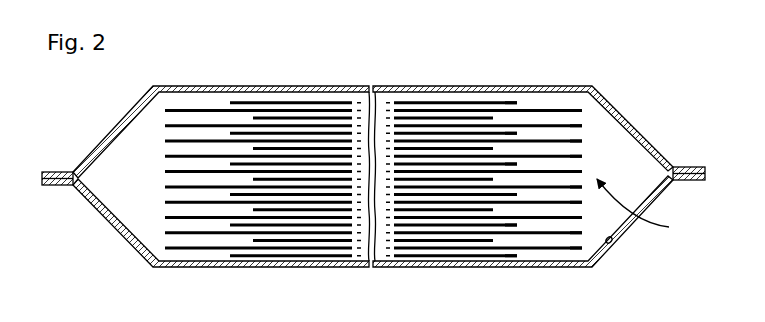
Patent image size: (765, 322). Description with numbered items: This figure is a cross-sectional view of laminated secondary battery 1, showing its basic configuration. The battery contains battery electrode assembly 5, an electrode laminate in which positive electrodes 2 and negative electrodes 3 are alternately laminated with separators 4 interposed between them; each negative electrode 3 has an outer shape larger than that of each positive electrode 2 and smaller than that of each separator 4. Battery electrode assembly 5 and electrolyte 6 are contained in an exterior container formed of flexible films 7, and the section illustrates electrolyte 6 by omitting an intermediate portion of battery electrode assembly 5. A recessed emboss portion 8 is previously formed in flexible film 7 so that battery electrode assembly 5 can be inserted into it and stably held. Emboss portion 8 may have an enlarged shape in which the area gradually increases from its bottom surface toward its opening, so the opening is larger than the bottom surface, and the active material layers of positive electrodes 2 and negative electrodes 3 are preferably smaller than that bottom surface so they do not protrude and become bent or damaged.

The laminated secondary battery 1 is at (219, 63).
The positive electrode 2 is at (467, 146).
The negative electrode 3 is at (507, 131).
The separator 4 is at (580, 135).
The battery electrode assembly 5 is at (638, 209).
The electrolyte 6 is at (363, 126).
The flexible film 7 is at (620, 113).
The emboss portion 8 is at (611, 243).